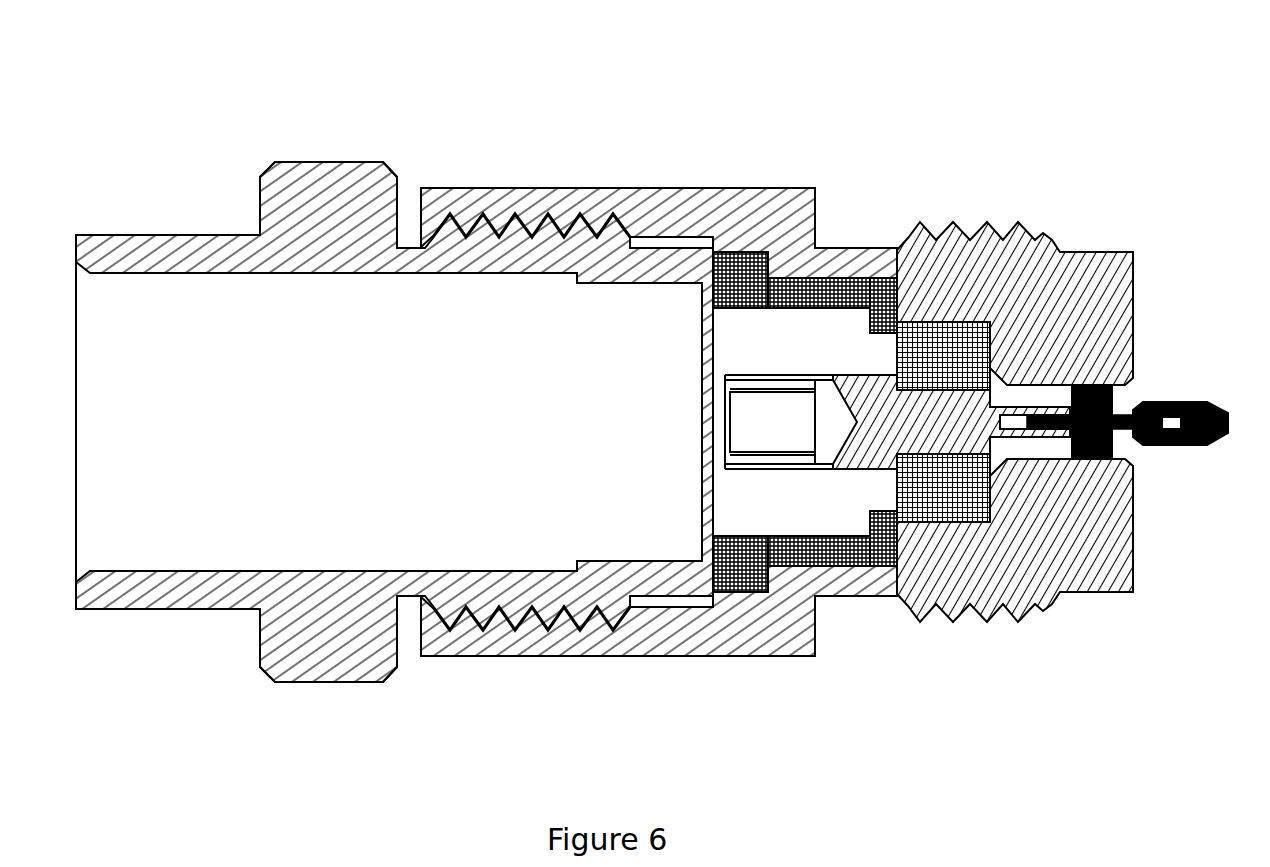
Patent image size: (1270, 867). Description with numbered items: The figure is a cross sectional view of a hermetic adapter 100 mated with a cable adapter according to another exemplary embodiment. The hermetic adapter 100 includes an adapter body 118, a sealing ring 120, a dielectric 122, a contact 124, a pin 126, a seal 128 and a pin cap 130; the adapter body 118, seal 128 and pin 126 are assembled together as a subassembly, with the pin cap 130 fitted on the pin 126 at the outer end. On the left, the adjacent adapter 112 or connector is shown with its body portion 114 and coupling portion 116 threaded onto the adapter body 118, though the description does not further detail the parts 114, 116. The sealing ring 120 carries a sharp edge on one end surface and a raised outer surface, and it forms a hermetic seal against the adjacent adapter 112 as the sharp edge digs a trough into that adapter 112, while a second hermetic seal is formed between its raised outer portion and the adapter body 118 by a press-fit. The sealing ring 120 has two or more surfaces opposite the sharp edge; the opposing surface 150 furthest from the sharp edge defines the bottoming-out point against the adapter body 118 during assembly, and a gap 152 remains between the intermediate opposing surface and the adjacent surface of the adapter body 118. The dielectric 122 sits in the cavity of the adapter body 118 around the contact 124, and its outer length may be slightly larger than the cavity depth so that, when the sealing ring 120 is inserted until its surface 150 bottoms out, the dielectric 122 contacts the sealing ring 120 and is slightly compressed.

The hermetic adapter 100 is at (838, 685).
The adapter 112 is at (313, 187).
The connector body 114 is at (546, 672).
The rear threaded body 116 is at (1069, 662).
The adapter body 118 is at (560, 207).
The sealing ring 120 is at (838, 293).
The dielectric 122 is at (957, 347).
The contact 124 is at (897, 432).
The pin 126 is at (1153, 447).
The seal 128 is at (1093, 388).
The pin cap 130 is at (1200, 404).
The opposing surface 150 is at (893, 303).
The gap 152 is at (773, 260).